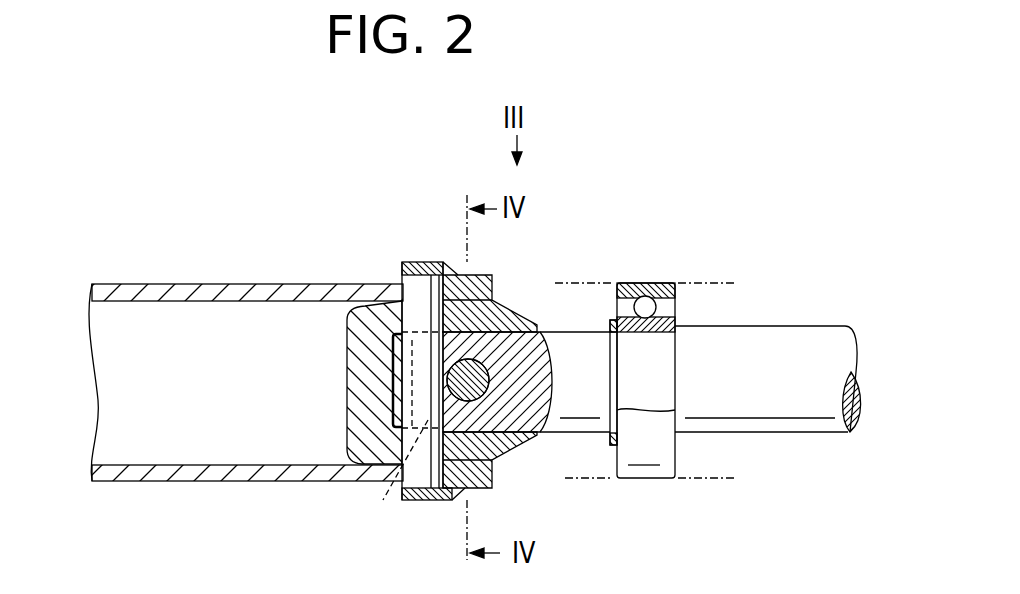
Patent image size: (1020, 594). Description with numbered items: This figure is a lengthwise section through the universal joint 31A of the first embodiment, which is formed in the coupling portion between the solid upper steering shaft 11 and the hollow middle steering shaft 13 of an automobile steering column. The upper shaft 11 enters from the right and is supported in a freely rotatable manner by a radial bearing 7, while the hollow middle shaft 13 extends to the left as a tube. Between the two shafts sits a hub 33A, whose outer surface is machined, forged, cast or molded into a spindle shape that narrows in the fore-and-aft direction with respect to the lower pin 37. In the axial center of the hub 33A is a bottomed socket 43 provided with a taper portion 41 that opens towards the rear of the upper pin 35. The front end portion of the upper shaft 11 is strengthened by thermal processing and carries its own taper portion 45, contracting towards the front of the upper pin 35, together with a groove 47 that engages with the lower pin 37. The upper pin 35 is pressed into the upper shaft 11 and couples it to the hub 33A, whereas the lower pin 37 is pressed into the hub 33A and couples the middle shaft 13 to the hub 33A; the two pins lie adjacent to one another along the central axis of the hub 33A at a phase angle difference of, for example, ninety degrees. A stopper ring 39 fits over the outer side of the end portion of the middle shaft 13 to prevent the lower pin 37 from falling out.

The middle steering shaft 13 is at (168, 284).
The lower pin 37 is at (412, 287).
The groove 47 is at (458, 273).
The taper portion 41 is at (505, 330).
The bottomed socket 43 is at (542, 332).
The universal joint 31A is at (571, 260).
The upper steering shaft 11 is at (785, 328).
The hub 33A is at (347, 415).
The taper portion 45 is at (390, 474).
The stopper ring 39 is at (420, 500).
The upper pin 35 is at (512, 445).
The radial bearing 7 is at (652, 470).